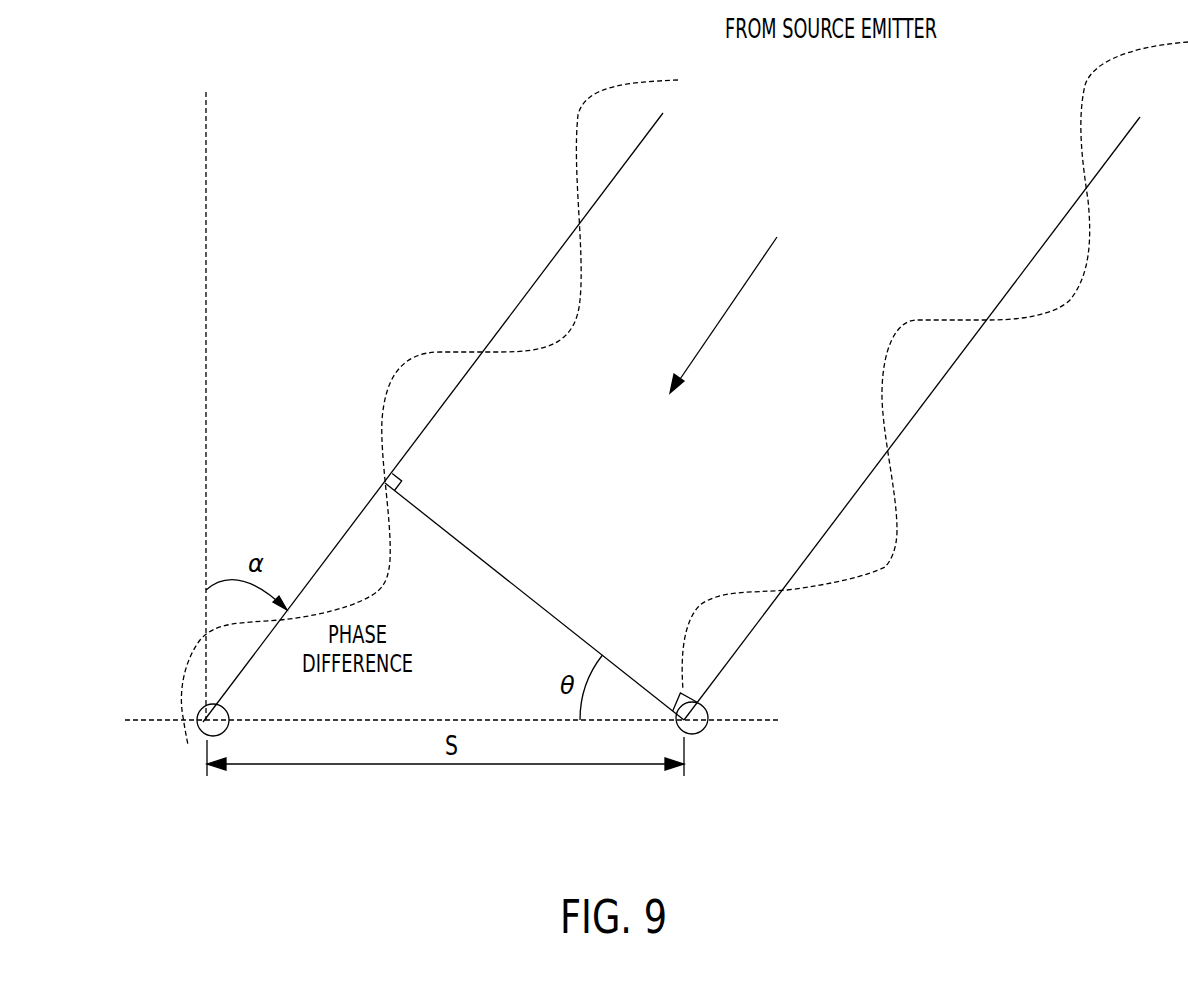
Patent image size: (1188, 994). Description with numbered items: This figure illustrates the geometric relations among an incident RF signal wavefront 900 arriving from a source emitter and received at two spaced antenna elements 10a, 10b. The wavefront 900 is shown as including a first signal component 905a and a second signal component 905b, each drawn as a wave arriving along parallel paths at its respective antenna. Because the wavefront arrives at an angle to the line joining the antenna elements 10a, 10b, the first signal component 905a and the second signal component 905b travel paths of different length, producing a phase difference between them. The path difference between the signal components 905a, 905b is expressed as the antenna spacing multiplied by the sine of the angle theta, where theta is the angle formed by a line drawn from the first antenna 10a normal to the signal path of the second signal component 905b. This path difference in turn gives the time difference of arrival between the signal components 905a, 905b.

The antenna element 10a is at (707, 852).
The antenna element 10b is at (228, 852).
The incident RF signal wavefront 900 is at (790, 172).
The first signal component 905a is at (885, 567).
The second signal component 905b is at (383, 585).